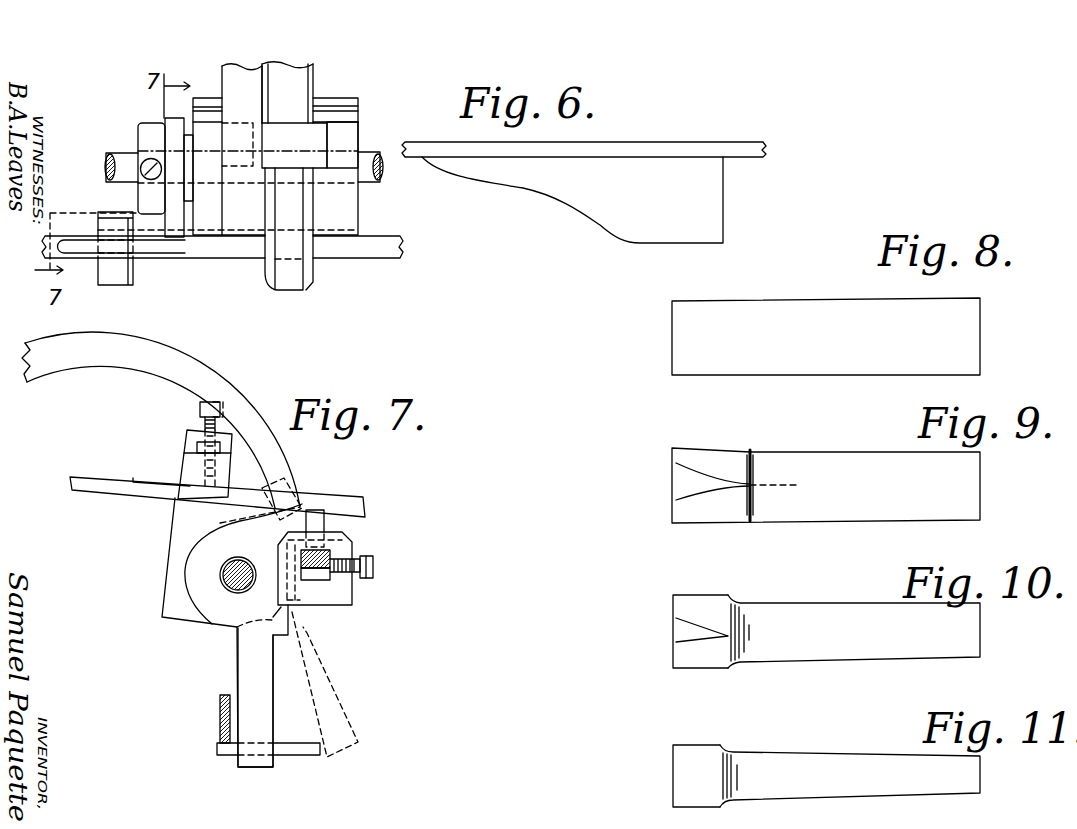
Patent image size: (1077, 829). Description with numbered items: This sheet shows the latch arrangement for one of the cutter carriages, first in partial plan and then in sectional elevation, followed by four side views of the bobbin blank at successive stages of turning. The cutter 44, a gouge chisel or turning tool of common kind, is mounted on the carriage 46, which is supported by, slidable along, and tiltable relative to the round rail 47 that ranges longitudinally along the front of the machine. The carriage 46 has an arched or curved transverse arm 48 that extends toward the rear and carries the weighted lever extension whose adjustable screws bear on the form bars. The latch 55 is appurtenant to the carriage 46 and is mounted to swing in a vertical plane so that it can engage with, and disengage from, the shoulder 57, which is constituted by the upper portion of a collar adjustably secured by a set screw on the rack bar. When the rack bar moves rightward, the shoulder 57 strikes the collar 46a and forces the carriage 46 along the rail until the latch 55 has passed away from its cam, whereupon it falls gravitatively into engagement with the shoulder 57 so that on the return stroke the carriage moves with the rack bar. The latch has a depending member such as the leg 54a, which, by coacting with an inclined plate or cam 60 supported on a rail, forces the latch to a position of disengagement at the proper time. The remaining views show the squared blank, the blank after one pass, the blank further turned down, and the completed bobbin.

In FIG. 6, the cutter 44 is at (290, 95).
In FIG. 7, the cutter 44 is at (217, 486).
In FIG. 6, the carriage 46 is at (310, 206).
In FIG. 7, the carriage 46 is at (232, 584).
In FIG. 6, the collar 46a is at (147, 200).
In FIG. 6, the round rail 47 is at (372, 152).
In FIG. 7, the round rail 47 is at (235, 588).
In FIG. 6, the arched transverse arm 48 is at (275, 166).
In FIG. 7, the arched transverse arm 48 is at (161, 420).
In FIG. 7, the depending member 54a is at (258, 697).
In FIG. 6, the latch 55 is at (153, 246).
In FIG. 7, the latch 55 is at (323, 525).
In FIG. 6, the shoulder 57 is at (112, 275).
In FIG. 6, the inclined plate or cam 60 is at (590, 217).
In FIG. 7, the inclined plate or cam 60 is at (291, 748).